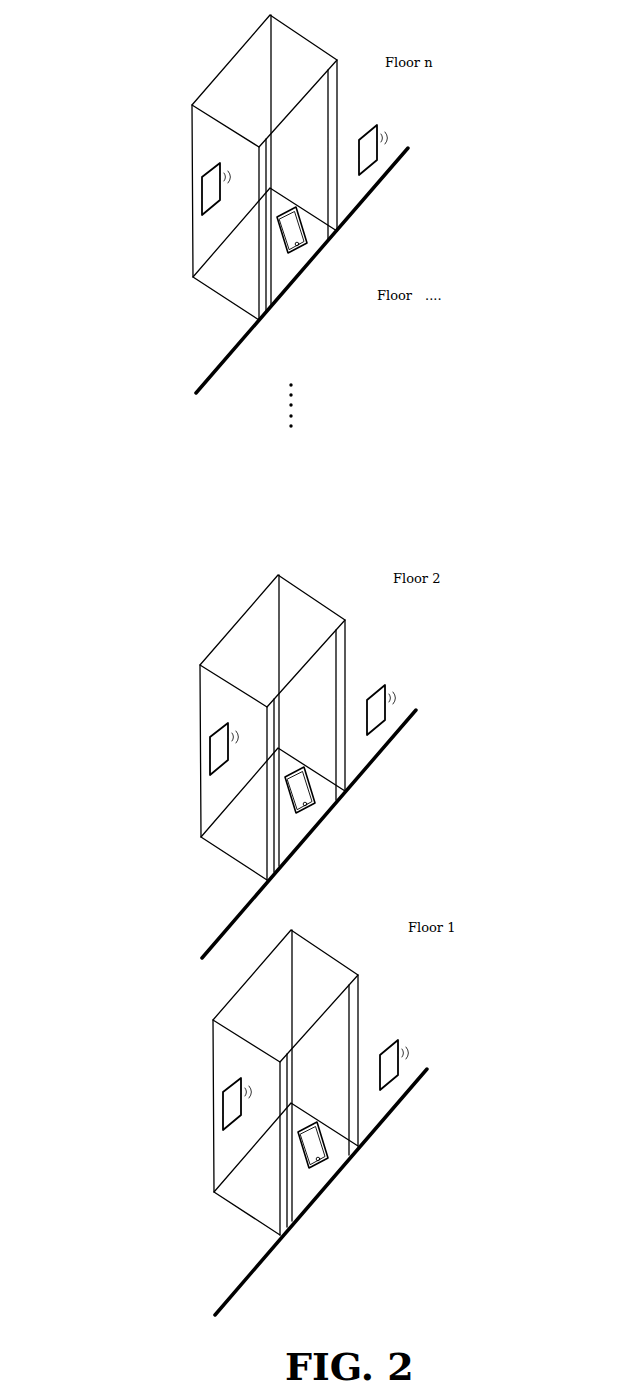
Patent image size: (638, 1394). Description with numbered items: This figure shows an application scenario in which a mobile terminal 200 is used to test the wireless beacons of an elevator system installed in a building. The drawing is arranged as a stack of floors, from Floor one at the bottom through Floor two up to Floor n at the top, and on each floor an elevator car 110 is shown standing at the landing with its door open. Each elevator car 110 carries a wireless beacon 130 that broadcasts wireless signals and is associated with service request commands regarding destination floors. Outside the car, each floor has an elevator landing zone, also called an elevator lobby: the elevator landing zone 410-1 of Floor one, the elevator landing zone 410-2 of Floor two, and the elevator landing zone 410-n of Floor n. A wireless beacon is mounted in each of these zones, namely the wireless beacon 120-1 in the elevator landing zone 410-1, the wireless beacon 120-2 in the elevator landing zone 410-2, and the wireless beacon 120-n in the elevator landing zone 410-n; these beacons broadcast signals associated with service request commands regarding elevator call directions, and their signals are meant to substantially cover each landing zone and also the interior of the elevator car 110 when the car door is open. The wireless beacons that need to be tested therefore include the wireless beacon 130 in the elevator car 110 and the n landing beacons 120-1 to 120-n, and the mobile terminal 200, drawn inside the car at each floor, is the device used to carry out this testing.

The elevator car 110 is at (315, 44).
The wireless beacon 130 is at (202, 182).
The mobile terminal 200 is at (295, 203).
The wireless beacon 120-n is at (373, 165).
The wireless beacon 120-2 is at (381, 725).
The wireless beacon 120-1 is at (395, 1082).
The elevator landing zone 410-n is at (440, 168).
The elevator landing zone 410-2 is at (472, 744).
The elevator landing zone 410-1 is at (475, 1073).